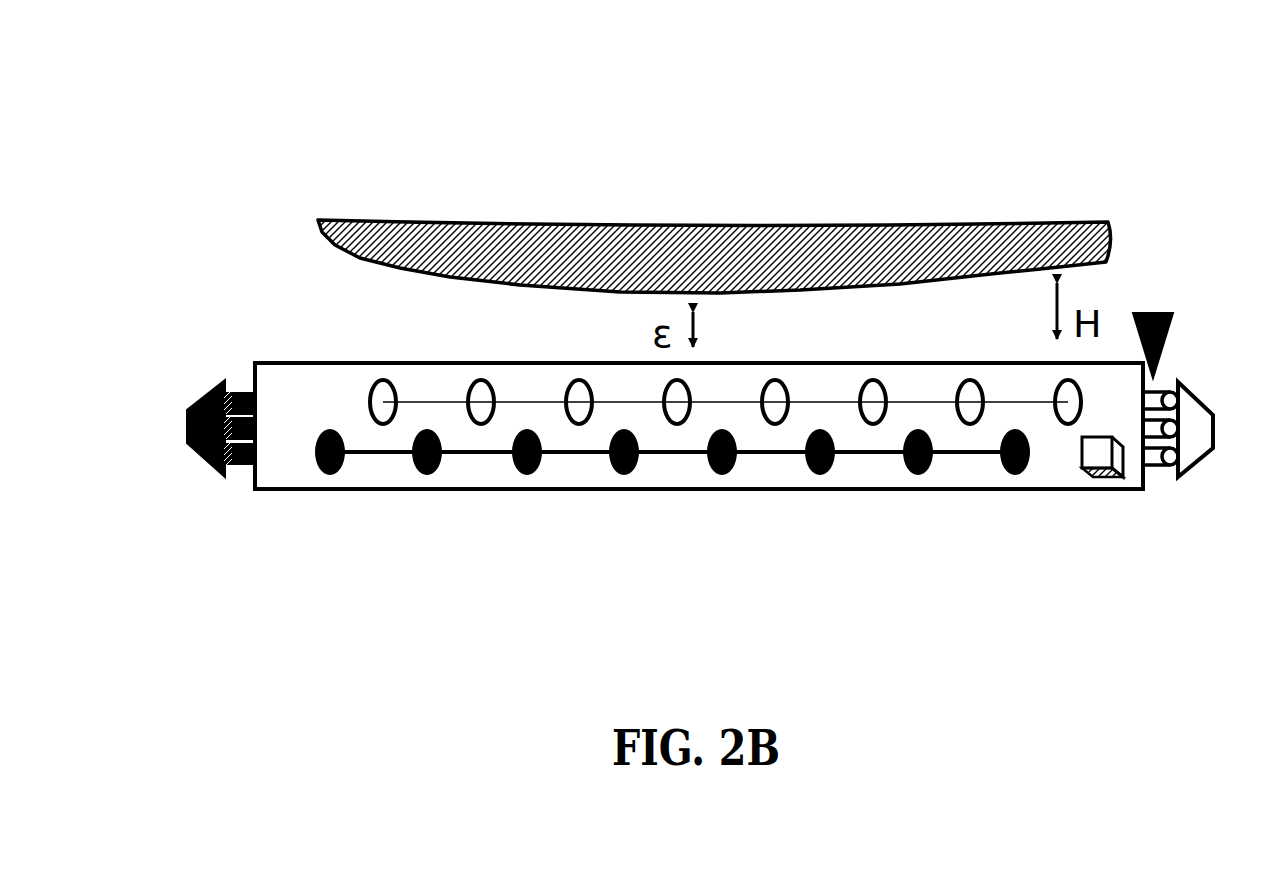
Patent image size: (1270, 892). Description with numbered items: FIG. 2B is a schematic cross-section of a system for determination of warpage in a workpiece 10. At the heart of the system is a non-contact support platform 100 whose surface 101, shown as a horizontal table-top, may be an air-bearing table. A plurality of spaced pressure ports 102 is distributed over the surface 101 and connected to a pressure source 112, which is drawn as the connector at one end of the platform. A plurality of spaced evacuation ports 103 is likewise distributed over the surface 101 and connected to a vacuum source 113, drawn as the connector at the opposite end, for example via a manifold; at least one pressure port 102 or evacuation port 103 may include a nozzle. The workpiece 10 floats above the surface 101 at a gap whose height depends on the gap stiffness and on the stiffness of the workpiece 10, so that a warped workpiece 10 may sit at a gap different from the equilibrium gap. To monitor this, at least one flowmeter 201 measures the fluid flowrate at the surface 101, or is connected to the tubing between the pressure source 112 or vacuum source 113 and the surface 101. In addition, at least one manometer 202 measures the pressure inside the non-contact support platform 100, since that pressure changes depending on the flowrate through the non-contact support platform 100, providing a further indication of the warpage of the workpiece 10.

The workpiece 10 is at (898, 224).
The non-contact support platform 100 is at (476, 464).
The surface 101 is at (310, 362).
The pressure ports 102 is at (873, 424).
The evacuation ports 103 is at (1016, 476).
The pressure source 112 is at (1193, 382).
The vacuum source 113 is at (222, 382).
The flowmeter 201 is at (1150, 312).
The manometer 202 is at (1106, 478).